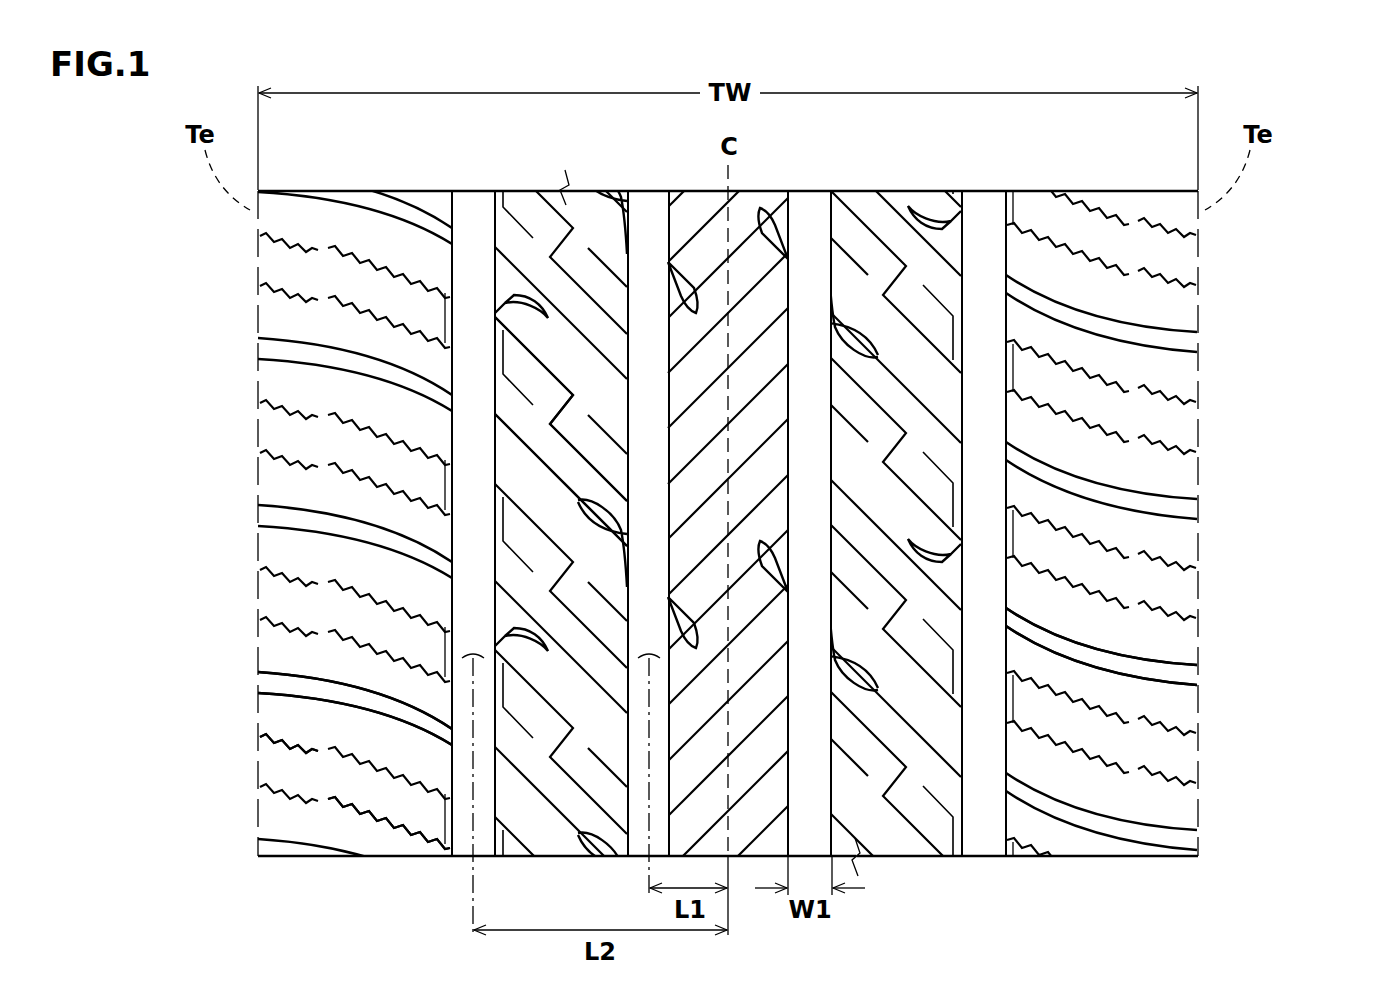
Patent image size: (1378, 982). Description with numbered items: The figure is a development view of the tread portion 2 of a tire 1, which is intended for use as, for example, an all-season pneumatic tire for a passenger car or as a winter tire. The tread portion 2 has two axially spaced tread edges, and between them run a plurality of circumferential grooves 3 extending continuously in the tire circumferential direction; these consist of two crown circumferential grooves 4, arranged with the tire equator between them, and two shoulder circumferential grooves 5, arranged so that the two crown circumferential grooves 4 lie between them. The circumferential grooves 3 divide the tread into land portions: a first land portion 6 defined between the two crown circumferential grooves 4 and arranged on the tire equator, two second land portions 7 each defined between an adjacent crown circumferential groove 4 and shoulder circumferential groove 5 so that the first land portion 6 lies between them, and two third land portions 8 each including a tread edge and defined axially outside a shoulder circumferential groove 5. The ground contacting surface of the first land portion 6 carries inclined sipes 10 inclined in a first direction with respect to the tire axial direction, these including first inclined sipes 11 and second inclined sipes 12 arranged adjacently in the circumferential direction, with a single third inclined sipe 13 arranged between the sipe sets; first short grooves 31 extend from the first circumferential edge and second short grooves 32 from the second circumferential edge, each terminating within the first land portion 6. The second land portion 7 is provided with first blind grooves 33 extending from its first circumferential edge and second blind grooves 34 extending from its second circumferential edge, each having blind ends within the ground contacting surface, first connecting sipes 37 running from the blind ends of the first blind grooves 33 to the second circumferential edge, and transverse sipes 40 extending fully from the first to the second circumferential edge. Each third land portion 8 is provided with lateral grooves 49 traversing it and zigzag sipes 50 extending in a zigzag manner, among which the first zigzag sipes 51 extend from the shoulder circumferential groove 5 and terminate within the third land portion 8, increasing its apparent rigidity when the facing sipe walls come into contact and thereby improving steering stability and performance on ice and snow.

The tire 1 is at (1032, 186).
The tread portion 2 is at (428, 186).
The circumferential grooves 3 is at (470, 372).
The crown circumferential grooves 4 is at (648, 228).
The shoulder circumferential grooves 5 is at (475, 228).
The first land portion 6 is at (718, 246).
The second land portion 7 is at (548, 228).
The third land portion 8 is at (345, 228).
The inclined sipes 10 is at (1009, 340).
The first inclined sipes 11 is at (737, 368).
The second inclined sipes 12 is at (757, 295).
The third inclined sipe 13 is at (737, 425).
The first short grooves 31 is at (778, 558).
The second short grooves 32 is at (680, 630).
The first blind grooves 33 is at (600, 528).
The second blind grooves 34 is at (525, 625).
The first connecting sipes 37 is at (548, 468).
The transverse sipes 40 is at (548, 365).
The lateral grooves 49 is at (323, 687).
The zigzag sipes 50 is at (367, 768).
The first zigzag sipes 51 is at (300, 742).